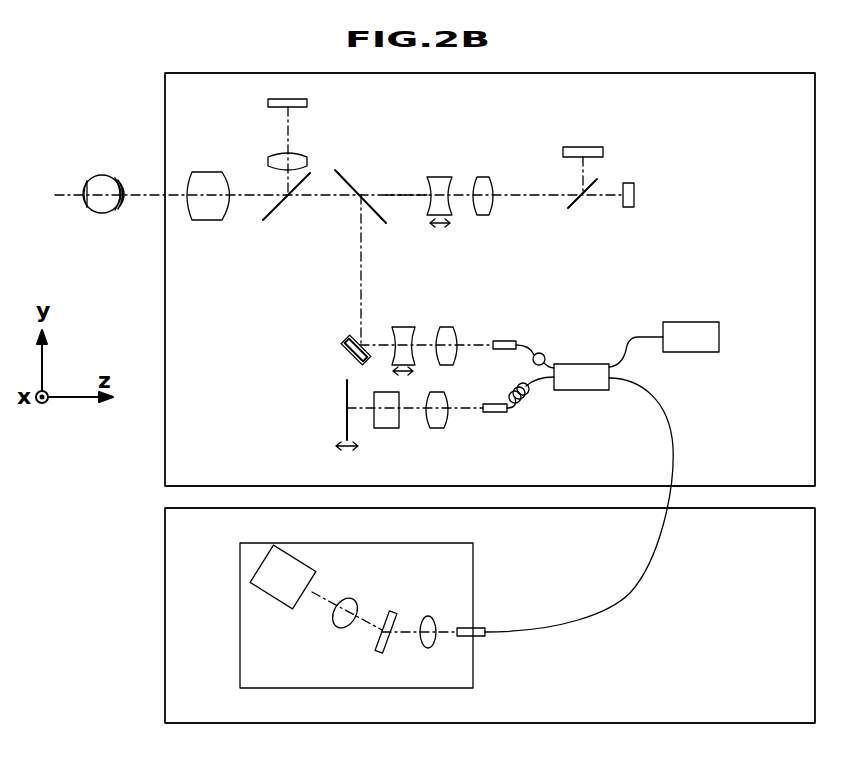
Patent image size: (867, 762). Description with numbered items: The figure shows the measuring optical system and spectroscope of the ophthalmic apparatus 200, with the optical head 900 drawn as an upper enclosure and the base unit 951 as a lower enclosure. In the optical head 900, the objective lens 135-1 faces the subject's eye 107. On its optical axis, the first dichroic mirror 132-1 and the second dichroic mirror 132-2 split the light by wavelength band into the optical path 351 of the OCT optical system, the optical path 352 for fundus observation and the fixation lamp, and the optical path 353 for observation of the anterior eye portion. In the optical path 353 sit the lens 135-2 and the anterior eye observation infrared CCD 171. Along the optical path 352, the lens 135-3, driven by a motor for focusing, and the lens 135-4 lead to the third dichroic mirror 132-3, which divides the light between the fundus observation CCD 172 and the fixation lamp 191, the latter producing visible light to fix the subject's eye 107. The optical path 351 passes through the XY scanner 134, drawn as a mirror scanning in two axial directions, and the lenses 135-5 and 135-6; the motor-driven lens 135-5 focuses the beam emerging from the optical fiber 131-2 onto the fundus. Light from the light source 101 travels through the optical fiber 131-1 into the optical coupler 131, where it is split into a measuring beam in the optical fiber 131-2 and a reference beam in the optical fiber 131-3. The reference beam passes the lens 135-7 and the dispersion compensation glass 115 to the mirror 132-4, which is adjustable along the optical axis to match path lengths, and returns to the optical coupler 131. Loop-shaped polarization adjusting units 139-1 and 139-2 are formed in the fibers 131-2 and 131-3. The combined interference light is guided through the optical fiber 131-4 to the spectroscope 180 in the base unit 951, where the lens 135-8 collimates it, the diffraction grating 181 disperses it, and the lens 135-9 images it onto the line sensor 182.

The ophthalmic apparatus 200 is at (107, 72).
The optical head 900 is at (165, 136).
The base unit 951 is at (165, 561).
The subject's eye 107 is at (103, 213).
The objective lens 135-1 is at (206, 220).
The lens 135-2 is at (276, 158).
The lens 135-3 is at (440, 180).
The lens 135-4 is at (515, 165).
The lens 135-5 is at (405, 330).
The lens 135-6 is at (470, 320).
The lens 135-7 is at (437, 428).
The lens 135-8 is at (425, 648).
The lens 135-9 is at (339, 628).
The first dichroic mirror 132-1 is at (273, 226).
The second dichroic mirror 132-2 is at (348, 180).
The third dichroic mirror 132-3 is at (590, 186).
The mirror 132-4 is at (345, 410).
The anterior eye observation infrared CCD 171 is at (268, 103).
The fundus observation CCD 172 is at (578, 147).
The fixation lamp 191 is at (634, 196).
The optical path of OCT optical system 351 is at (358, 302).
The optical path for fundus observation and fixation lamp 352 is at (415, 200).
The optical path for anterior eye observation 353 is at (290, 142).
The XY scanner 134 is at (345, 345).
The dispersion compensation glass 115 is at (388, 428).
The optical coupler 131 is at (581, 377).
The optical fiber 131-1 is at (635, 337).
The optical fiber 131-2 is at (527, 343).
The optical fiber 131-3 is at (532, 381).
The optical fiber 131-4 is at (676, 440).
The polarization adjusting unit 139-1 is at (575, 337).
The polarization adjusting unit 139-2 is at (512, 392).
The light source 101 is at (691, 337).
The spectroscope 180 is at (361, 602).
The diffraction grating 181 is at (393, 613).
The line sensor 182 is at (283, 577).